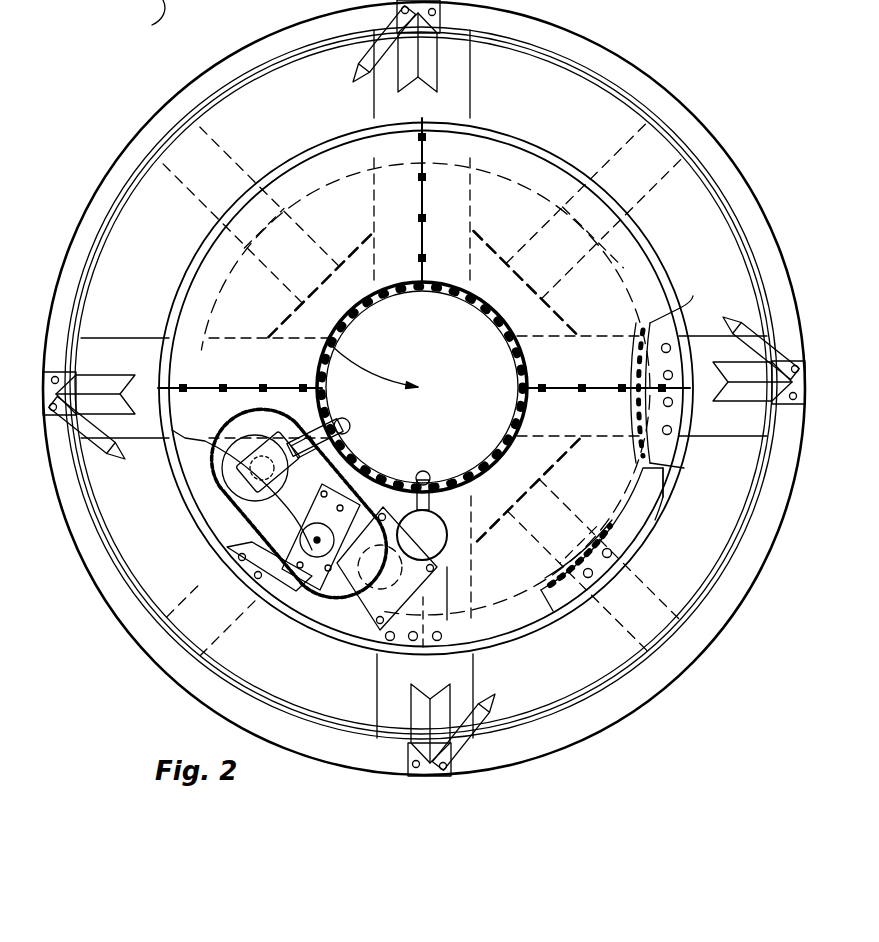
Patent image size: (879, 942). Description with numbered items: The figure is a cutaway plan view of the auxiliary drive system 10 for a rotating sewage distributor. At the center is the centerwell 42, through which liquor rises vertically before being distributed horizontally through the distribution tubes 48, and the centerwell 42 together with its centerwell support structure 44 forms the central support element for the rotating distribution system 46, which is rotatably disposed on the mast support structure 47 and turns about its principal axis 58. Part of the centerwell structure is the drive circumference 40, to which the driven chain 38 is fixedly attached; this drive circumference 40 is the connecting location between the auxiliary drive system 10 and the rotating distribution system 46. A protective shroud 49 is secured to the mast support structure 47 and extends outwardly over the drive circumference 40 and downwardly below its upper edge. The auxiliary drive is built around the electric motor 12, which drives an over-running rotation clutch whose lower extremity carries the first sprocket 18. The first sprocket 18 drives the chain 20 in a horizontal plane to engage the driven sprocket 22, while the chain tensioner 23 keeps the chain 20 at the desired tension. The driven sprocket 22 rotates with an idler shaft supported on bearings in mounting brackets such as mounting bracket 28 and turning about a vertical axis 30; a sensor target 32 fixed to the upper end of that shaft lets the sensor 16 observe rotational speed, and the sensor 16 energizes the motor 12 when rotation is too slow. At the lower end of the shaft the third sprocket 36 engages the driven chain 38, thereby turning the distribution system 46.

The auxiliary drive system 10 is at (460, 597).
The electric motor 12 is at (450, 540).
The sensor 16 is at (290, 444).
The first sprocket 18 is at (398, 562).
The chain 20 is at (208, 566).
The driven sprocket 22 is at (232, 490).
The chain tensioner 23 is at (313, 594).
The mounting bracket 28 is at (131, 12).
The vertical axis 30 is at (215, 462).
The sensor target 32 is at (240, 490).
The third sprocket 36 is at (216, 299).
The driven chain 38 is at (655, 322).
The drive circumference 40 is at (632, 548).
The centerwell 42 is at (752, 195).
The centerwell support structure 44 is at (392, 88).
The rotating distribution system 46 is at (725, 142).
The mast support structure 47 is at (480, 292).
The distribution tubes 48 is at (462, 68).
The protective shroud 49 is at (665, 486).
The principal axis 58 is at (330, 345).